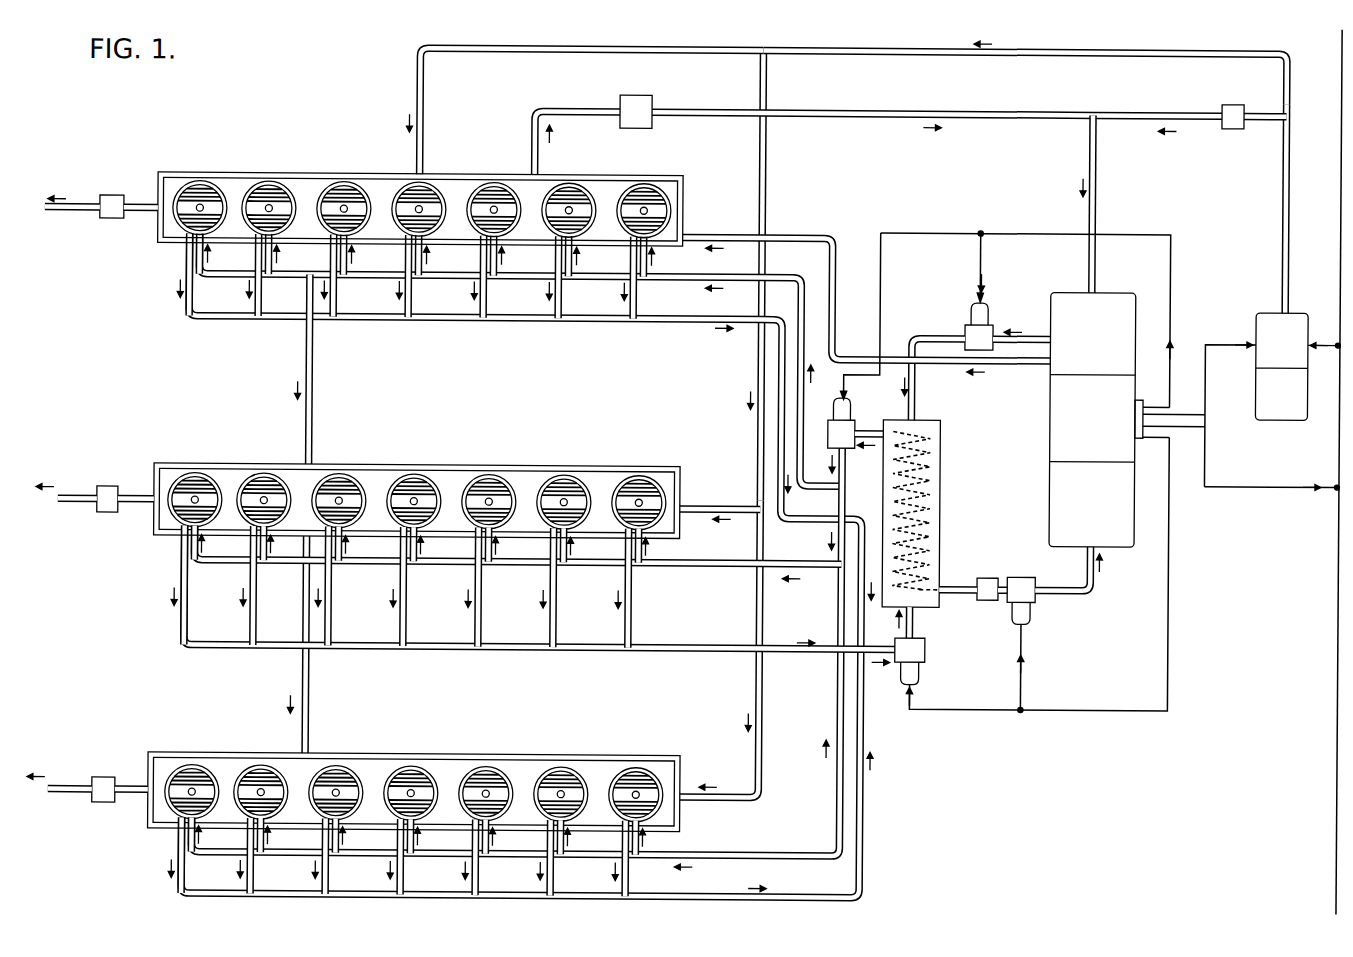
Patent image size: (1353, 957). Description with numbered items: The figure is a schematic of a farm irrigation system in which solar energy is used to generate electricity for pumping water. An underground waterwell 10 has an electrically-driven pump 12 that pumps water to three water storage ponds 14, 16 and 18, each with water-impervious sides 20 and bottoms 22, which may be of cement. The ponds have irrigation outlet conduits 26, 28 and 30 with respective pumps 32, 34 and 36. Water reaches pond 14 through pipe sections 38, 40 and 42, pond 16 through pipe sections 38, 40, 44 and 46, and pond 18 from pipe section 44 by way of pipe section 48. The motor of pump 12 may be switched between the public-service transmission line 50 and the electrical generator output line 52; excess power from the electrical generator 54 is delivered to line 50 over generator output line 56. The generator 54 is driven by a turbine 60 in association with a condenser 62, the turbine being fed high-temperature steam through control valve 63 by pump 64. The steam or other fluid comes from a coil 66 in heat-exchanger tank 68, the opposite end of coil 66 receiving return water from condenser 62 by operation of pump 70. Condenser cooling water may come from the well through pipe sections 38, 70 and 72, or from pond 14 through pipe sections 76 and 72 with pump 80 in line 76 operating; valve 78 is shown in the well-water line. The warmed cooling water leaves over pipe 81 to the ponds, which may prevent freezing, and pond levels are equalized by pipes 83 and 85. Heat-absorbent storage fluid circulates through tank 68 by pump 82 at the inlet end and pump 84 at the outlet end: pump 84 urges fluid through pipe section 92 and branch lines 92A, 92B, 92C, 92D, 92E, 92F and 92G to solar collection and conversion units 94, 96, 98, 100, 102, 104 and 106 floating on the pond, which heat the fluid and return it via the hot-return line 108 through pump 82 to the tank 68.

The underground waterwell 10 is at (1290, 418).
The electrically-driven pump 12 is at (1300, 309).
The water storage pond 14 is at (172, 176).
The water storage pond 16 is at (176, 467).
The water storage pond 18 is at (184, 757).
The water-impervious sides 20 is at (231, 176).
The water-impervious bottoms 22 is at (305, 197).
The irrigation outlet conduit 26 is at (85, 215).
The irrigation outlet conduit 28 is at (85, 507).
The irrigation outlet conduit 30 is at (78, 800).
The pump 32 is at (110, 198).
The pump 34 is at (108, 489).
The pump 36 is at (103, 780).
The pipe section 38 is at (1280, 185).
The pipe section 40 is at (1166, 49).
The pipe section 42 is at (603, 49).
The pipe section 44 is at (755, 444).
The pipe section 46 is at (714, 502).
The pipe section 48 is at (763, 718).
The public-service transmission line 50 is at (1339, 212).
The electrical generator output line 52 is at (1222, 340).
The electrical generator 54 is at (1049, 416).
The generator output line 56 is at (1298, 488).
The turbine 60 is at (1049, 486).
The condenser 62 is at (1118, 293).
The control valve 63 is at (985, 576).
The pump 64 is at (1021, 575).
The coil 66 is at (930, 488).
The heat-exchanger tank 68 is at (940, 518).
The pump 70 is at (1147, 110).
The pipe section 72 is at (1097, 196).
The pipe section 76 is at (860, 109).
The valve 78 is at (1232, 101).
The pump 80 is at (650, 96).
The pipe 81 is at (815, 236).
The pump 82 is at (927, 656).
The pipe 83 is at (316, 386).
The pump 84 is at (856, 422).
The pipe 85 is at (316, 704).
The pipe section 92 is at (782, 279).
The branch line 92A is at (190, 255).
The branch line 92B is at (262, 255).
The branch line 92C is at (349, 272).
The branch line 92D is at (425, 272).
The branch line 92E is at (500, 272).
The branch line 92F is at (575, 272).
The branch line 92G is at (650, 272).
The solar collection and conversion unit 94 is at (199, 184).
The solar collection and conversion unit 96 is at (268, 184).
The solar collection and conversion unit 98 is at (343, 184).
The solar collection and conversion unit 100 is at (419, 184).
The solar collection and conversion unit 102 is at (492, 184).
The solar collection and conversion unit 104 is at (568, 184).
The solar collection and conversion unit 106 is at (643, 184).
The hot-return line 108 is at (668, 322).